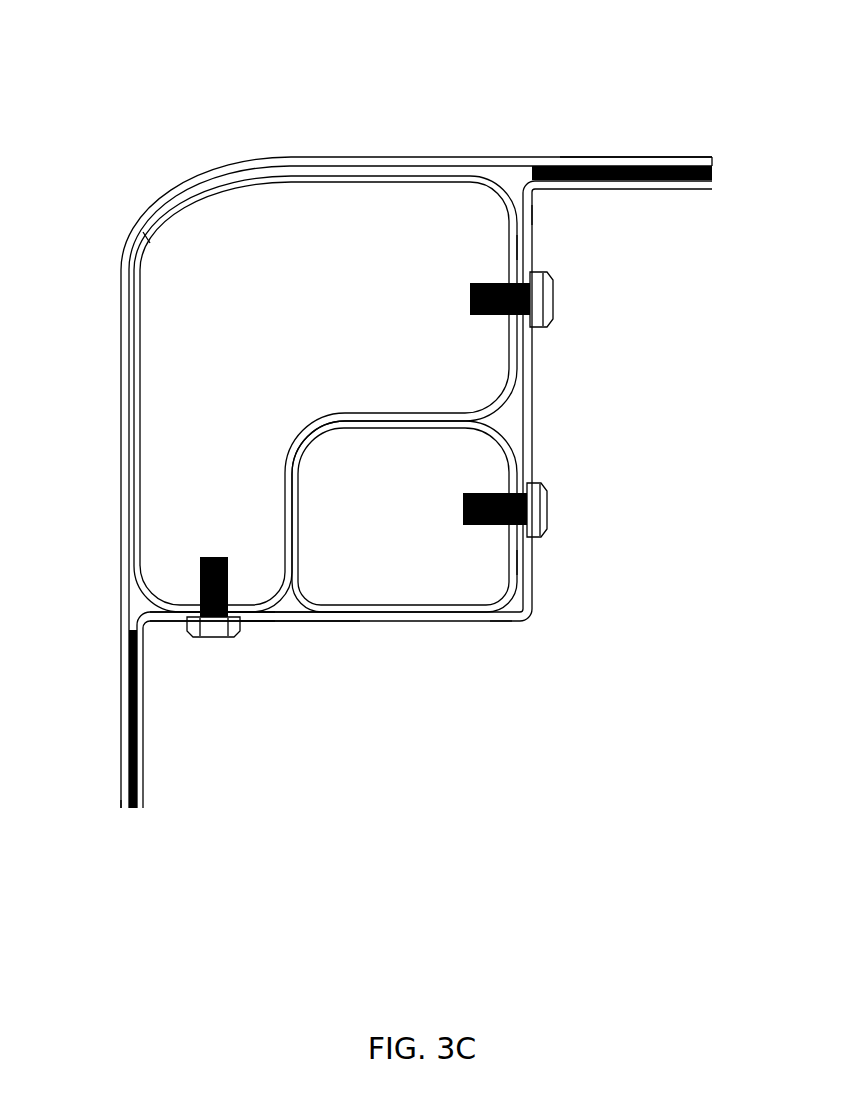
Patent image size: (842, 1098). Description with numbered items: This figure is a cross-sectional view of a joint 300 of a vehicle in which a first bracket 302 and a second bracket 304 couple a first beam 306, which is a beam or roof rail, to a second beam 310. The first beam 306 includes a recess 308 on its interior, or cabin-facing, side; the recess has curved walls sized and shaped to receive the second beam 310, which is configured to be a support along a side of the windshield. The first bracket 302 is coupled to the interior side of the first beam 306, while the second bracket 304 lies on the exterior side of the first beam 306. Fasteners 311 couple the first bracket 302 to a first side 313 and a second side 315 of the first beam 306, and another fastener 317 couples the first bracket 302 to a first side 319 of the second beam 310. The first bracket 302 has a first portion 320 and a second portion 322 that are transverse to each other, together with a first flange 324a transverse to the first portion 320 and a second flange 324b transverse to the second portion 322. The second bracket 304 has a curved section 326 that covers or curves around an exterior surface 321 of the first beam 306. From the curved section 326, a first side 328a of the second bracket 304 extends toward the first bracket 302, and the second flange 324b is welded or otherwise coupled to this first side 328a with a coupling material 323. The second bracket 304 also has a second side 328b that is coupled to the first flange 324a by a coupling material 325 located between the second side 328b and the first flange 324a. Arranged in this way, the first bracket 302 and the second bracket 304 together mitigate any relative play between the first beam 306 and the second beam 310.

The joint 300 is at (363, 77).
The first bracket 302 is at (533, 462).
The second bracket 304 is at (640, 158).
The first beam 306 is at (277, 308).
The recess 308 is at (302, 613).
The second beam 310 is at (382, 517).
The fasteners 311 is at (554, 297).
The first side 313 is at (516, 250).
The second side 315 is at (256, 625).
The fastener 317 is at (548, 510).
The first side 319 is at (521, 562).
The first portion 320 is at (533, 215).
The exterior surface 321 is at (142, 233).
The second portion 322 is at (500, 621).
The coupling material 323 is at (121, 797).
The first flange 324a is at (712, 178).
The second flange 324b is at (143, 712).
The coupling material 325 is at (713, 161).
The curved section 326 is at (205, 178).
The first side 328a is at (121, 440).
The second side 328b is at (498, 164).